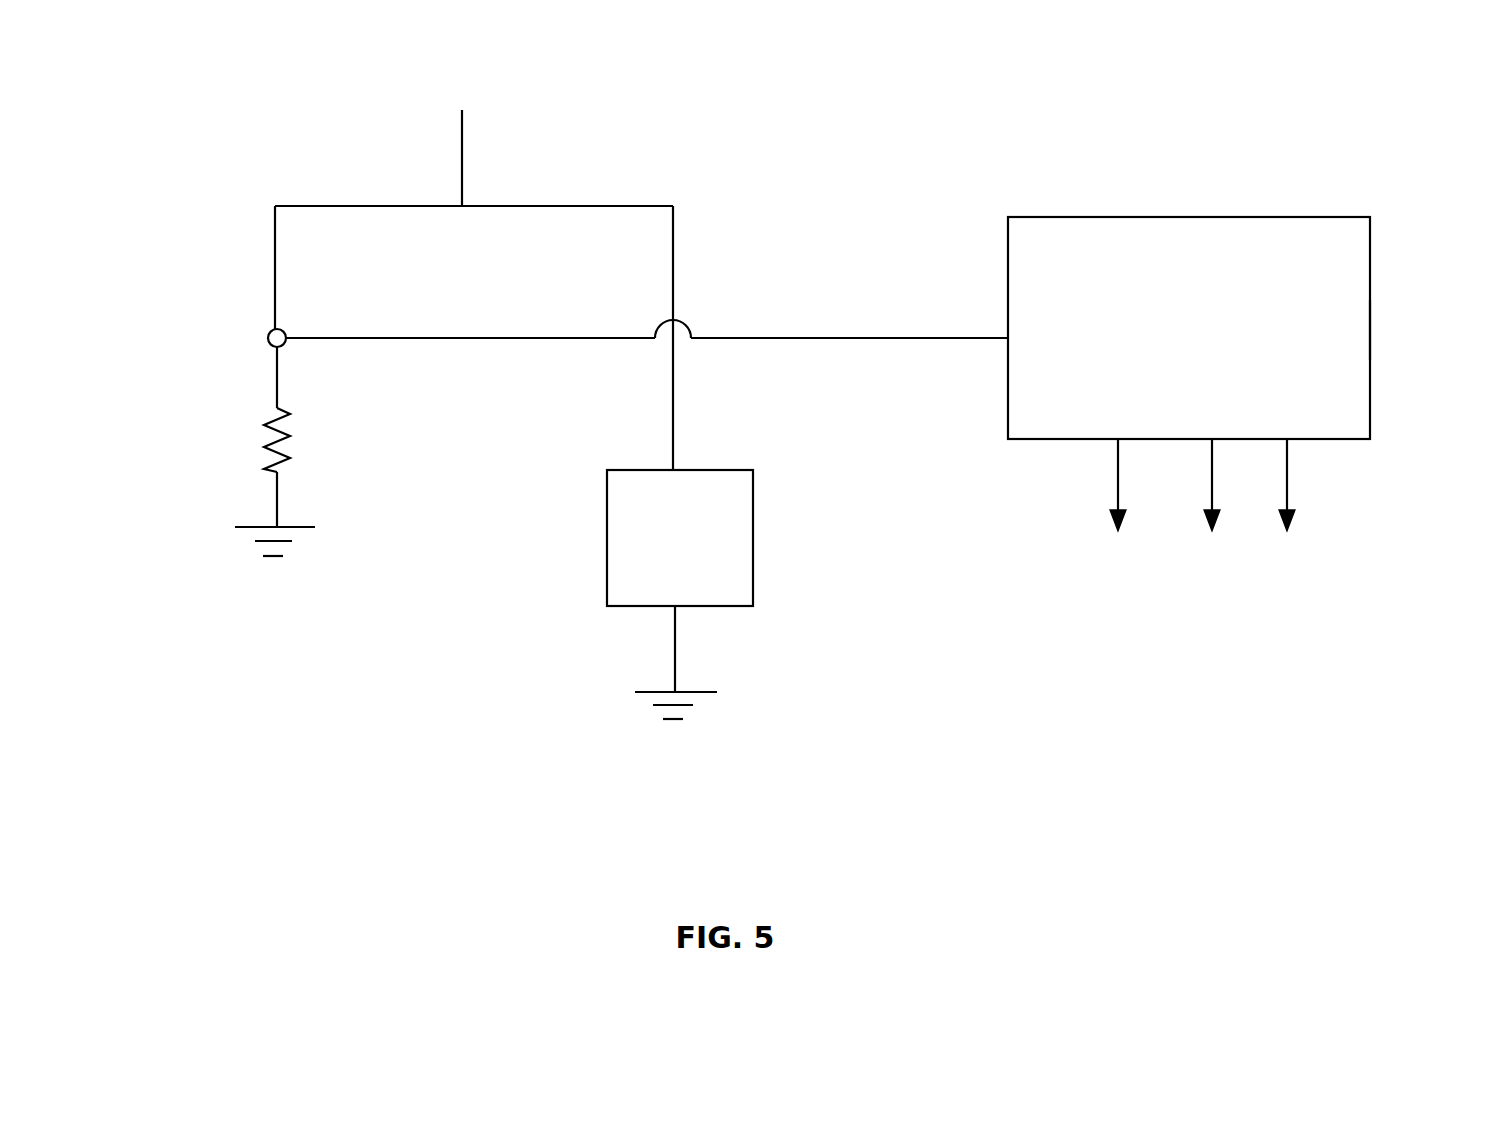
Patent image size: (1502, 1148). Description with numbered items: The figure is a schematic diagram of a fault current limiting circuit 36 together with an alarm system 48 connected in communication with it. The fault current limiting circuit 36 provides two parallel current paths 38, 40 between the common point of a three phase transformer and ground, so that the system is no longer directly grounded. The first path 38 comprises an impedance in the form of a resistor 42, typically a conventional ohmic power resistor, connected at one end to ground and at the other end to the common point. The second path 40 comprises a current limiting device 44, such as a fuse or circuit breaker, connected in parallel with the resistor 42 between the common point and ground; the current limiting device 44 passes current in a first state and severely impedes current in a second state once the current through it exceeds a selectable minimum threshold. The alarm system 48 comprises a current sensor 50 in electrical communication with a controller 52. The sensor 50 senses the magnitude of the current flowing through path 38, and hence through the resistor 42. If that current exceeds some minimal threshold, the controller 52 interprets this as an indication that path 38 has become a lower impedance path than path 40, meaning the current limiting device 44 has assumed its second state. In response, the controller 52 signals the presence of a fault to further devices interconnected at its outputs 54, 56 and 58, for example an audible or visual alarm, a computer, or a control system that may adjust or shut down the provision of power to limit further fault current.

The fault current limiting circuit 36 is at (320, 669).
The current path 38 is at (275, 263).
The current path 40 is at (673, 255).
The resistor 42 is at (263, 447).
The current limiting device 44 is at (753, 535).
The alarm system 48 is at (1258, 173).
The current sensor 50 is at (267, 338).
The controller 52 is at (1370, 327).
The output 54 is at (1117, 483).
The output 56 is at (1210, 488).
The output 58 is at (1285, 491).